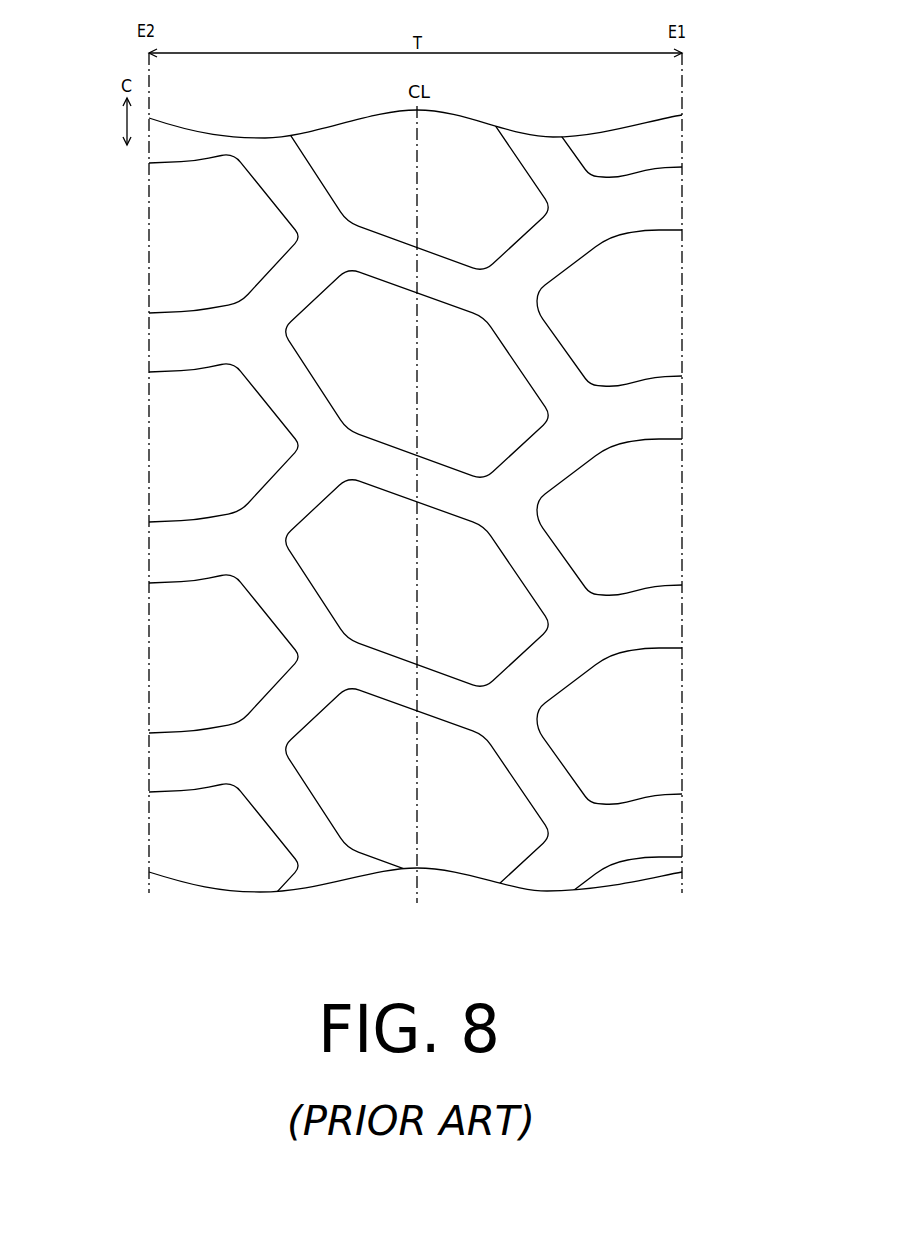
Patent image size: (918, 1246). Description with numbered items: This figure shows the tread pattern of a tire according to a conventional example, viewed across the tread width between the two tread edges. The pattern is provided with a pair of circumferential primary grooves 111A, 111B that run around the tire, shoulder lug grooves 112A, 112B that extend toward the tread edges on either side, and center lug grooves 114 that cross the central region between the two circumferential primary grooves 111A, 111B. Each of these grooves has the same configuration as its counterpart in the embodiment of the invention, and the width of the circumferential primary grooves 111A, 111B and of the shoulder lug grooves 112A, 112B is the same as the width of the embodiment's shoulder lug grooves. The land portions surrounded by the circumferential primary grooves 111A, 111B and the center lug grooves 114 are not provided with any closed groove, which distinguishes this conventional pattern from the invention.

The center lug grooves 114 is at (433, 275).
The circumferential primary groove 111A is at (535, 357).
The circumferential primary groove 111B is at (290, 381).
The shoulder lug groove 112A is at (650, 413).
The shoulder lug groove 112B is at (195, 552).